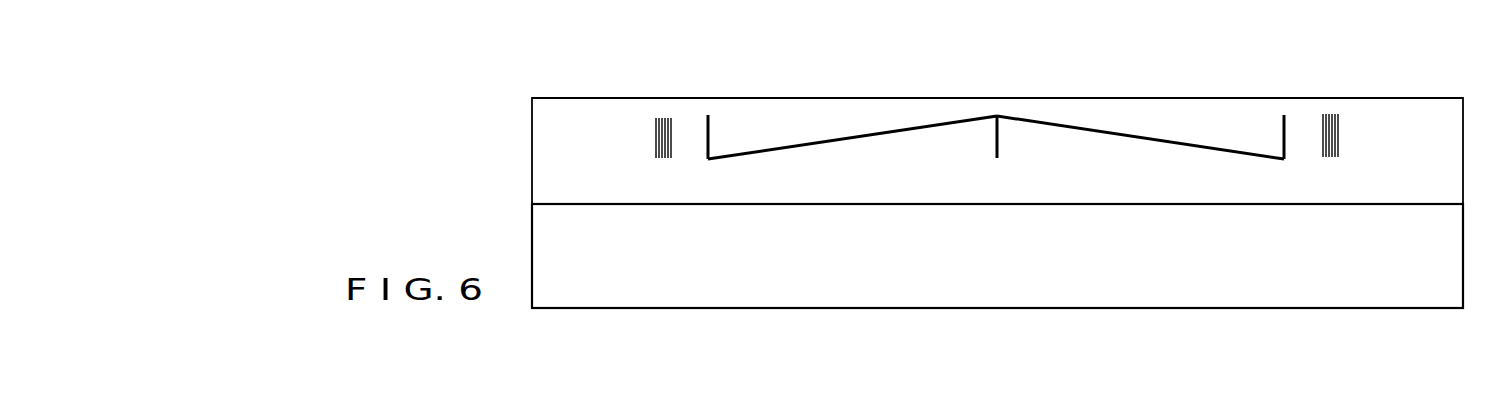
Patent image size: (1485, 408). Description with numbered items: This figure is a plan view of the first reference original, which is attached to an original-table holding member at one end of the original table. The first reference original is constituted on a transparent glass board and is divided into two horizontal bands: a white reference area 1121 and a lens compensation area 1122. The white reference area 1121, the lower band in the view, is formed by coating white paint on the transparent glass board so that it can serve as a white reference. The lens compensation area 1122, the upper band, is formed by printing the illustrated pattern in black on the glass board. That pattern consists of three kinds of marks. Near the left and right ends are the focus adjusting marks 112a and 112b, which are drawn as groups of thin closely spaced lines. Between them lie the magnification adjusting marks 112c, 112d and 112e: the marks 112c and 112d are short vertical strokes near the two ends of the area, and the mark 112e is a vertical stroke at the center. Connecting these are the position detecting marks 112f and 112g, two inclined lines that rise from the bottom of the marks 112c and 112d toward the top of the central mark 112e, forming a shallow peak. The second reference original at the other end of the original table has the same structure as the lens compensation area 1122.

The white reference area 1121 is at (1040, 308).
The lens compensation area 1122 is at (1152, 98).
The focus adjusting mark 112a is at (667, 110).
The focus adjusting mark 112b is at (1338, 118).
The magnification adjusting mark 112c is at (711, 121).
The magnification adjusting mark 112d is at (1286, 120).
The magnification adjusting mark 112e is at (999, 142).
The position detecting mark 112f is at (873, 133).
The position detecting mark 112g is at (1087, 130).